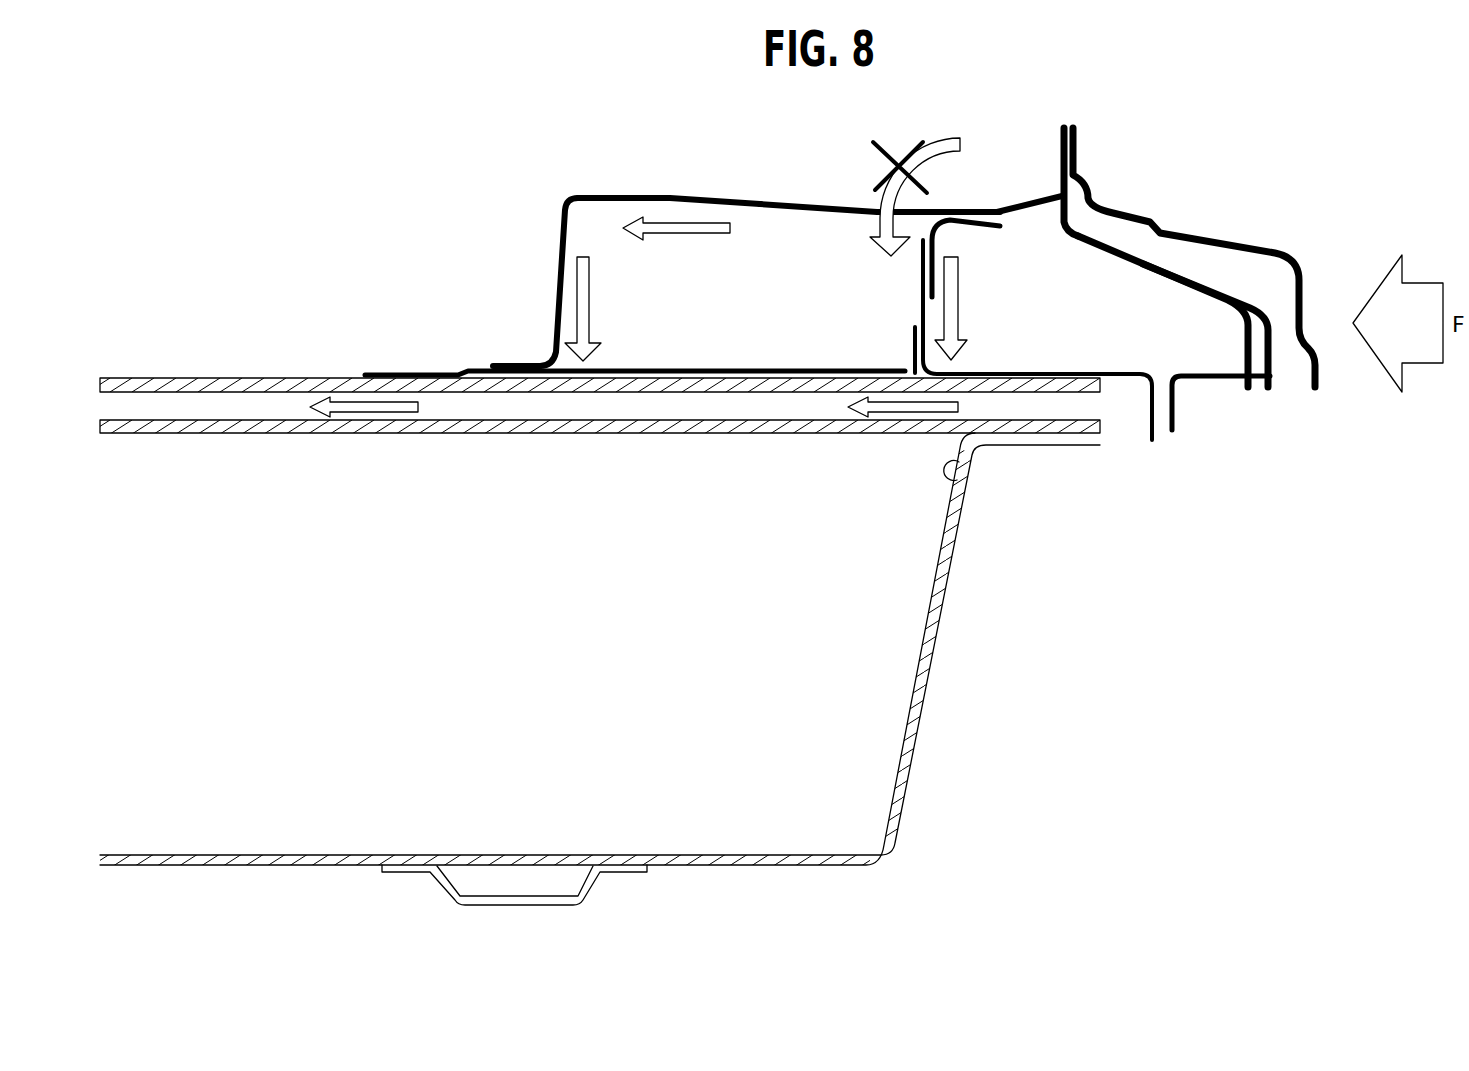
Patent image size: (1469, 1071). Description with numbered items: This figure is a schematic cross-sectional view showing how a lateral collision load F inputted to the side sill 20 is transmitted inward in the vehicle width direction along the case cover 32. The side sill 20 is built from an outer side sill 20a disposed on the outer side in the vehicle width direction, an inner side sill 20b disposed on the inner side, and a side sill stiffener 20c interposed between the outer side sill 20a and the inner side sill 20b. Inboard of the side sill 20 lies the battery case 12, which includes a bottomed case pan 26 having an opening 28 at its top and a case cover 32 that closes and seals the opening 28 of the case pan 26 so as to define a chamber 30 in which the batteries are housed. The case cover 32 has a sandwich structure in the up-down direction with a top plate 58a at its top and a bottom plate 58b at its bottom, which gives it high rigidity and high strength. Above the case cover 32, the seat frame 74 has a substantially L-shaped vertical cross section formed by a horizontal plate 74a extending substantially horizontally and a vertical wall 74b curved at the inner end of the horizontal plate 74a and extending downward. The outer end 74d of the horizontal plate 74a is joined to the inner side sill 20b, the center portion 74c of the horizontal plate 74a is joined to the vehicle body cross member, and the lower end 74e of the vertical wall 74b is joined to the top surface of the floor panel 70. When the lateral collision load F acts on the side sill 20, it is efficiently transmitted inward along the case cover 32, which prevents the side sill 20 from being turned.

The battery case 12 is at (600, 691).
The side sill 20 is at (1137, 284).
The outer side sill 20a is at (1258, 236).
The inner side sill 20b is at (1012, 198).
The side sill stiffener 20c is at (1122, 252).
The case pan 26 is at (696, 880).
The opening 28 is at (962, 485).
The chamber 30 is at (522, 672).
The case cover 32 is at (600, 401).
The top plate 58a is at (300, 384).
The bottom plate 58b is at (300, 434).
The floor panel 70 is at (722, 372).
The seat frame 74 is at (740, 227).
The horizontal plate 74a is at (835, 207).
The vertical wall 74b is at (553, 250).
The center portion 74c is at (760, 196).
The outer end 74d is at (978, 204).
The lower end 74e is at (500, 363).